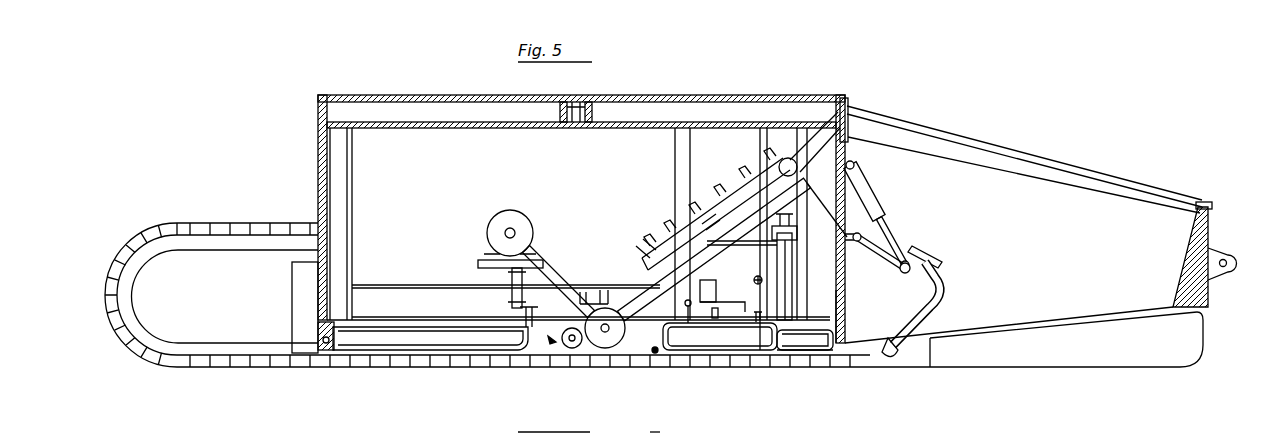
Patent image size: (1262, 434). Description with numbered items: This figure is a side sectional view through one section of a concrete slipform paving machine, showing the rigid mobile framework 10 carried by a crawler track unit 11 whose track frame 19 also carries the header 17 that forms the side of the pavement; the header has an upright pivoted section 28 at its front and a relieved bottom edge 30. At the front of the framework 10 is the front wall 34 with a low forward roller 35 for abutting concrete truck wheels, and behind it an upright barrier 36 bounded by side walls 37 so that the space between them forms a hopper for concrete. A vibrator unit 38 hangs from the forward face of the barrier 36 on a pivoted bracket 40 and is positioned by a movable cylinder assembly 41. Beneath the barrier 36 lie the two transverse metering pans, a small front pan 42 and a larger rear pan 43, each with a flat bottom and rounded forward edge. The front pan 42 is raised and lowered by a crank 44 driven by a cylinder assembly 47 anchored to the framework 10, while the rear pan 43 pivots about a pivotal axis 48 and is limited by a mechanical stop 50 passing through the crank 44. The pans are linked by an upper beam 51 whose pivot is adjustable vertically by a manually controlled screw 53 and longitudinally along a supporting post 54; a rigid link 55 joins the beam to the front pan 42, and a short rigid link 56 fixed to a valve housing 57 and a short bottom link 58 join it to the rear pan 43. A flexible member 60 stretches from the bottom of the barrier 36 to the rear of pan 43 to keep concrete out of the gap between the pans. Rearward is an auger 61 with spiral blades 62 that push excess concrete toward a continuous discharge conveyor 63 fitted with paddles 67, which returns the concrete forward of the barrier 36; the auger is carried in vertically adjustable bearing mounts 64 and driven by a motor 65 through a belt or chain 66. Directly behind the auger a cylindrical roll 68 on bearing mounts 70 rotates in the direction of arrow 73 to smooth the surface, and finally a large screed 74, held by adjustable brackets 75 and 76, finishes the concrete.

The rigid mobile framework 10 is at (290, 155).
The crawler track unit 11 is at (141, 223).
The header 17 is at (305, 283).
The track frame 19 is at (232, 304).
The pivoted section 28 is at (1085, 362).
The relieved bottom edge 30 is at (1122, 328).
The front wall 34 is at (1188, 258).
The forward roller 35 is at (1228, 272).
The upright barrier 36 is at (845, 297).
The side wall 37 is at (1027, 240).
The vibrator unit 38 is at (930, 318).
The pivoted bracket 40 is at (866, 250).
The movable cylinder assembly 41 is at (884, 212).
The front pan 42 is at (824, 346).
The rear pan 43 is at (735, 350).
The crank 44 is at (758, 312).
The cylinder assembly 47 is at (795, 254).
The pivotal axis 48 is at (690, 322).
The mechanical stop 50 is at (760, 322).
The upper beam 51 is at (752, 245).
The manually controlled screw 53 is at (728, 202).
The supporting post 54 is at (710, 224).
The rigid link 55 is at (792, 270).
The short rigid link 56 is at (708, 284).
The valve housing 57 is at (722, 299).
The short bottom link 58 is at (718, 313).
The flexible member 60 is at (800, 352).
The auger 61 is at (612, 340).
The blade 62 is at (655, 350).
The discharge conveyor 63 is at (642, 282).
The bearing mount 64 is at (604, 292).
The motor 65 is at (496, 224).
The belt or chain 66 is at (560, 268).
The paddle 67 is at (648, 252).
The cylindrical roll 68 is at (570, 348).
The bearing mount 70 is at (568, 320).
The arrow 73 is at (550, 340).
The screed 74 is at (432, 347).
The adjustable bracket 75 is at (510, 292).
The adjustable bracket 76 is at (322, 340).